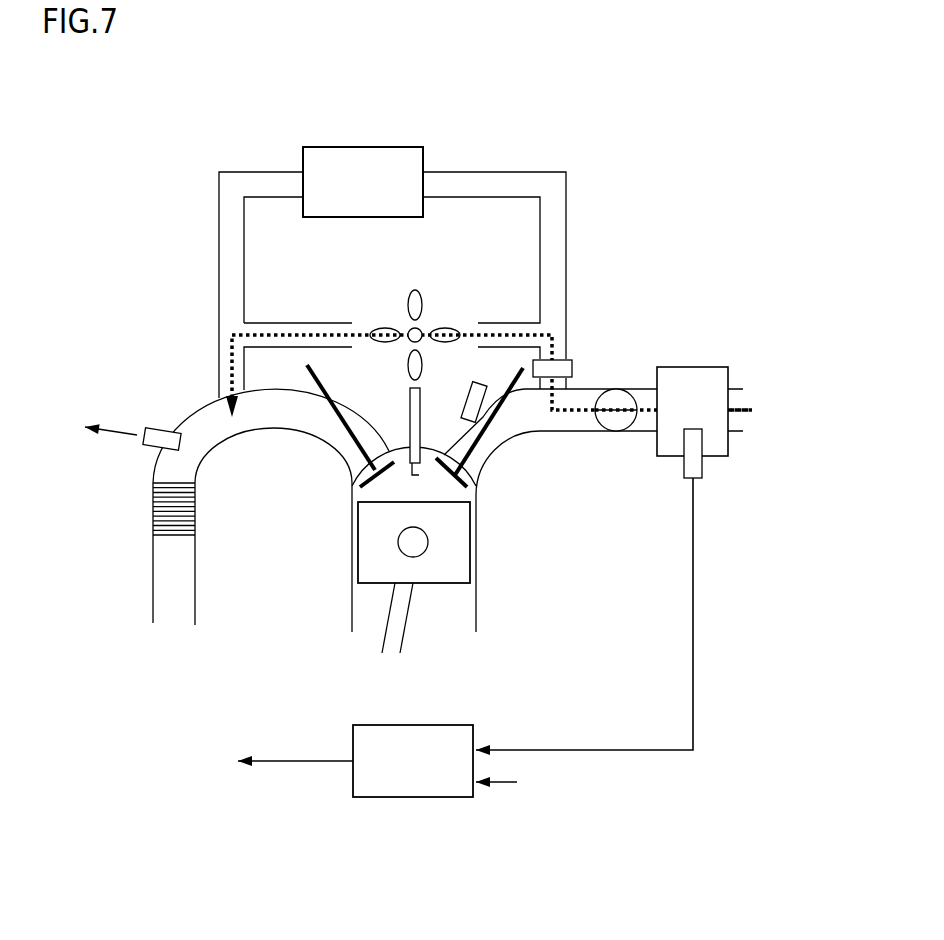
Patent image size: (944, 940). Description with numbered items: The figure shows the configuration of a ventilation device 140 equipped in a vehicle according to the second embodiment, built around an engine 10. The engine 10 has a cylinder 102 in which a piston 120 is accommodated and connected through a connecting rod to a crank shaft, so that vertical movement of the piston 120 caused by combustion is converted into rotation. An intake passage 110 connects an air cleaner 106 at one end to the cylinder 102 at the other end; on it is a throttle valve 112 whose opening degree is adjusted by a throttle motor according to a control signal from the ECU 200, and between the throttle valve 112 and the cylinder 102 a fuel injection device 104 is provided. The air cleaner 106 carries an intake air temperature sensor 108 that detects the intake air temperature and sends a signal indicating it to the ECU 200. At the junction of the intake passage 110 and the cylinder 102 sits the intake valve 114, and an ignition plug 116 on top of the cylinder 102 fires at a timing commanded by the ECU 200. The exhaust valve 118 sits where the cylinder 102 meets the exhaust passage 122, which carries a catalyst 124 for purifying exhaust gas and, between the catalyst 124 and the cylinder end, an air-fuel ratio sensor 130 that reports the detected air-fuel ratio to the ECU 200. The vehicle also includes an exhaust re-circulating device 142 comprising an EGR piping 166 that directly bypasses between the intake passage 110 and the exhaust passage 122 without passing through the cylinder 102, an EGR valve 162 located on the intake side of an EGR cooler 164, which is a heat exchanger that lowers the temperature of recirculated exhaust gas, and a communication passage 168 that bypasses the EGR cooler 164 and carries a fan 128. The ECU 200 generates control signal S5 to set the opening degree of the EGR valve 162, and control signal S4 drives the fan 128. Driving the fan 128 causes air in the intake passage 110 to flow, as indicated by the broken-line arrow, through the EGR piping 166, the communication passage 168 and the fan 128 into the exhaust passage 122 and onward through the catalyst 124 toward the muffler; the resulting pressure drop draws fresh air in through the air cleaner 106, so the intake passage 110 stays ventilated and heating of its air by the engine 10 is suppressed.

The engine 10 is at (579, 254).
The cylinder 102 is at (477, 620).
The fuel injection device 104 is at (473, 383).
The air cleaner 106 is at (697, 367).
The intake air temperature sensor 108 is at (702, 467).
The intake passage 110 is at (650, 388).
The throttle valve 112 is at (615, 432).
The intake valve 114 is at (490, 415).
The ignition plug 116 is at (422, 422).
The exhaust valve 118 is at (333, 413).
The piston 120 is at (460, 548).
The exhaust passage 122 is at (247, 430).
The catalyst 124 is at (153, 510).
The fan 128 is at (427, 282).
The air-fuel ratio sensor 130 is at (157, 427).
The ventilation device 140 is at (327, 292).
The exhaust re-circulating device 142 is at (289, 146).
The EGR valve 162 is at (572, 358).
The EGR cooler 164 is at (388, 147).
The EGR piping 166 is at (492, 173).
The communication passage 168 is at (274, 322).
The ECU 200 is at (440, 725).
The control signal S4 is at (397, 317).
The control signal S5 is at (575, 368).